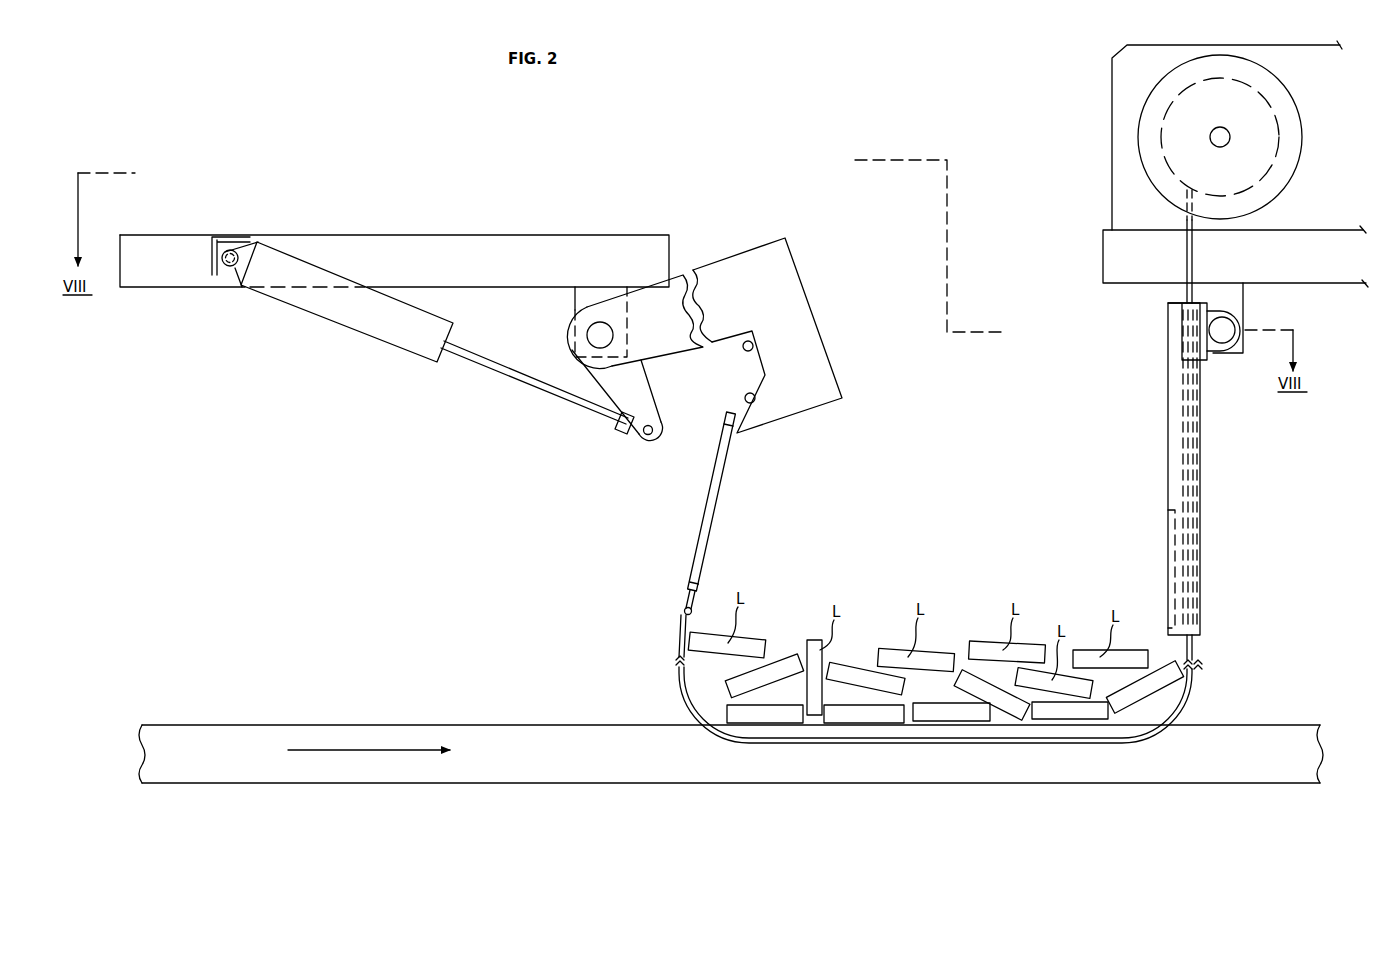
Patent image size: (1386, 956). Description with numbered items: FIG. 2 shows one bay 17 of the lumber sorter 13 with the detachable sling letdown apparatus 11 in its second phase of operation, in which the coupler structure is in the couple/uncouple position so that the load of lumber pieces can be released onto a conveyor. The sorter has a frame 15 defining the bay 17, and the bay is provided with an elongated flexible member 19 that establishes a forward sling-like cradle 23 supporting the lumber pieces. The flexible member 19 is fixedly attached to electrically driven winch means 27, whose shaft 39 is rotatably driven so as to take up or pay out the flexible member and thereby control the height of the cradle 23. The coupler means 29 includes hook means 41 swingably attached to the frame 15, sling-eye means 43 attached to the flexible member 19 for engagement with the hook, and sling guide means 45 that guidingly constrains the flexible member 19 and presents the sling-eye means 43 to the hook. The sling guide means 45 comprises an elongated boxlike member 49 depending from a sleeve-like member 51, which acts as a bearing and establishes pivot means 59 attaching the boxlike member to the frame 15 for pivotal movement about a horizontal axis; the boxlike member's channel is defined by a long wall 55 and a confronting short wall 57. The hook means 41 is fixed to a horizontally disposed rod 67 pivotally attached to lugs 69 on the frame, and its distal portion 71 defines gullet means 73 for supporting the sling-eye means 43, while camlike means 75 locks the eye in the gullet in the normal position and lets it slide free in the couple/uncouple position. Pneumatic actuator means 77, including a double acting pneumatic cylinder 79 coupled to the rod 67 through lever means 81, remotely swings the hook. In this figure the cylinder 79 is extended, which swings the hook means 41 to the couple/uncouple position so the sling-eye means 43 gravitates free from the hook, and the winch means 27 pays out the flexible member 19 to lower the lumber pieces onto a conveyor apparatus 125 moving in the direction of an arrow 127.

The detachable sling letdown apparatus 11 is at (183, 515).
The lumber sorter 13 is at (272, 124).
The frame 15 is at (484, 262).
The bay 17 is at (986, 158).
The elongated flexible member 19 is at (681, 681).
The forward sling-like cradle 23 is at (1186, 710).
The winch means 27 is at (1232, 194).
The coupler means 29 is at (604, 156).
The shaft 39 is at (1222, 136).
The hook means 41 is at (738, 302).
The sling-eye means 43 is at (708, 516).
The sling guide means 45 is at (1168, 445).
The elongated boxlike member 49 is at (1168, 388).
The sleeve-like member 51 is at (1213, 355).
The long wall 55 is at (1203, 482).
The short wall 57 is at (1170, 538).
The pivot means 59 is at (1222, 331).
The horizontally disposed rod 67 is at (598, 336).
The lug 69 is at (580, 292).
The distal portion 71 is at (807, 316).
The gullet means 73 is at (753, 346).
The camlike means 75 is at (753, 401).
The pneumatic actuator means 77 is at (343, 465).
The double acting pneumatic cylinder 79 is at (383, 321).
The lever means 81 is at (643, 397).
The conveyor apparatus 125 is at (542, 770).
The arrow 127 is at (358, 750).